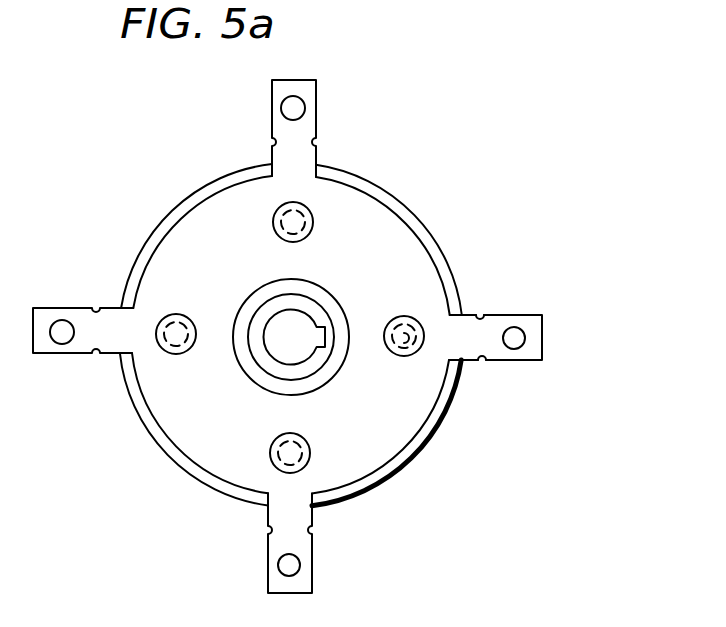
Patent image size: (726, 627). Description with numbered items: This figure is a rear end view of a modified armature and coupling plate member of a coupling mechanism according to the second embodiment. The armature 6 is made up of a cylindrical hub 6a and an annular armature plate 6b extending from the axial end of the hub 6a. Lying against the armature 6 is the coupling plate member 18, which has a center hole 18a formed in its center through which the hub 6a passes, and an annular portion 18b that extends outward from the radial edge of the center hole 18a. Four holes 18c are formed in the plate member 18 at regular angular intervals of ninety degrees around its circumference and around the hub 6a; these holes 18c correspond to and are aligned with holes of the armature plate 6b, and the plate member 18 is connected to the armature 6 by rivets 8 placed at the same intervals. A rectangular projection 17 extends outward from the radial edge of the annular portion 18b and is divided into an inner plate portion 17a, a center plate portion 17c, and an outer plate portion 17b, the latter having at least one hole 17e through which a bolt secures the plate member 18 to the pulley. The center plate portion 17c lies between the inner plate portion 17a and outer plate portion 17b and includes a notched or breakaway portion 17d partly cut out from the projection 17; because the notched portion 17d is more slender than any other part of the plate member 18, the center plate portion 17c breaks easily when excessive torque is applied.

The armature 6 is at (165, 205).
The hub 6a is at (310, 310).
The armature plate 6b is at (425, 235).
The rivet 8 is at (405, 318).
The projection 17 is at (543, 328).
The inner plate portion 17a is at (455, 330).
The outer plate portion 17b is at (497, 323).
The center plate portion 17c is at (482, 360).
The notched portion 17d is at (470, 365).
The hole 17e is at (515, 345).
The coupling plate member 18 is at (363, 192).
The center hole 18a is at (258, 382).
The annular portion 18b is at (175, 387).
The hole 18c is at (405, 343).